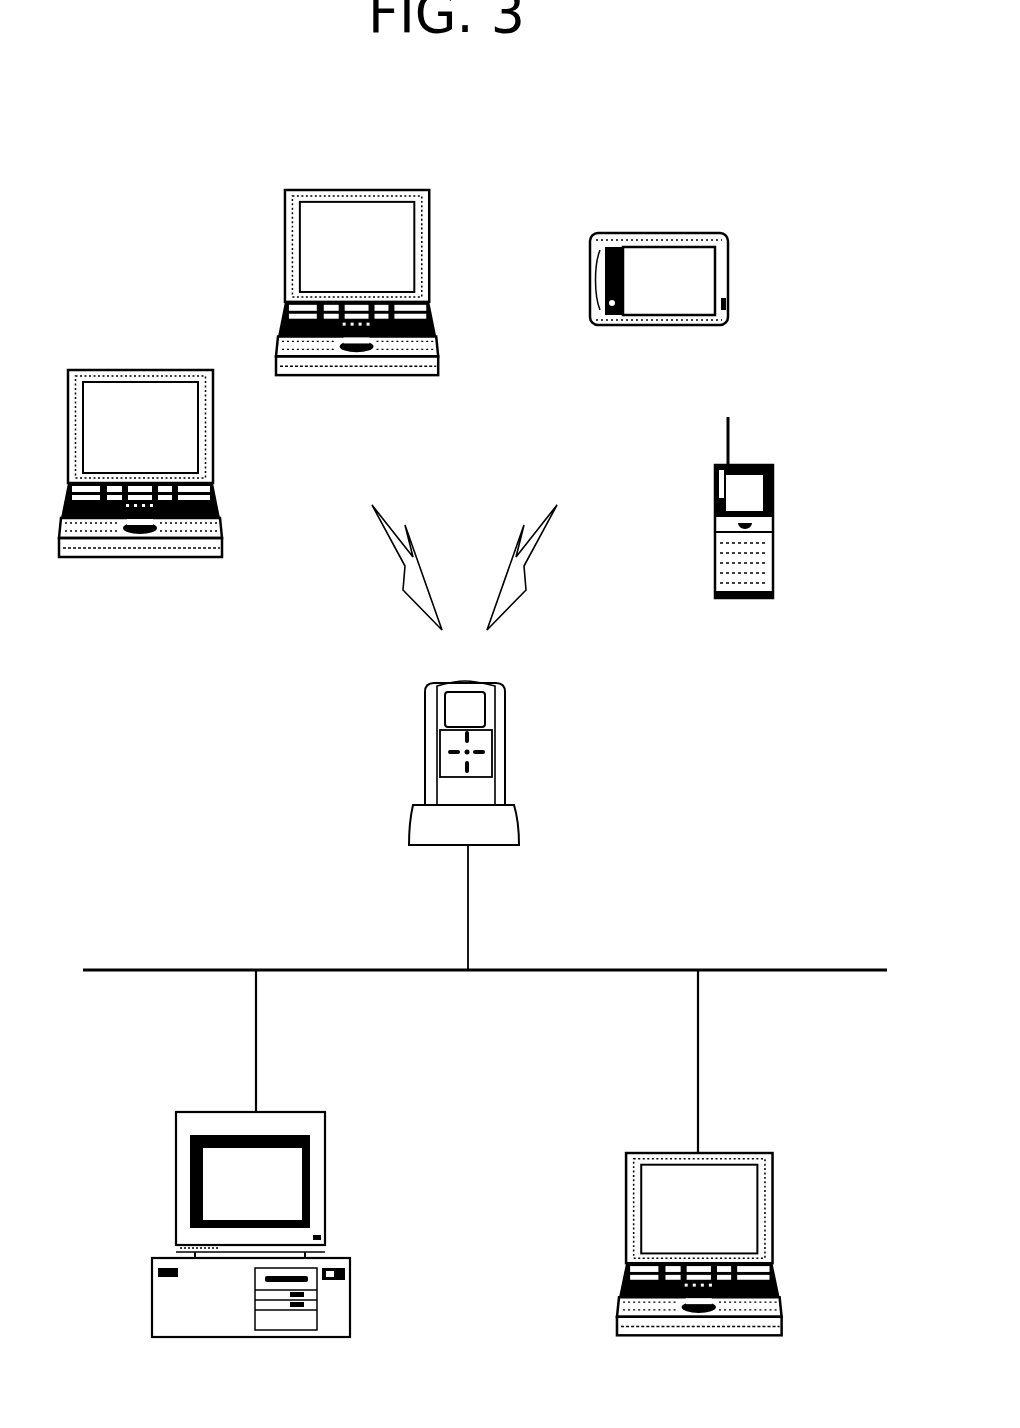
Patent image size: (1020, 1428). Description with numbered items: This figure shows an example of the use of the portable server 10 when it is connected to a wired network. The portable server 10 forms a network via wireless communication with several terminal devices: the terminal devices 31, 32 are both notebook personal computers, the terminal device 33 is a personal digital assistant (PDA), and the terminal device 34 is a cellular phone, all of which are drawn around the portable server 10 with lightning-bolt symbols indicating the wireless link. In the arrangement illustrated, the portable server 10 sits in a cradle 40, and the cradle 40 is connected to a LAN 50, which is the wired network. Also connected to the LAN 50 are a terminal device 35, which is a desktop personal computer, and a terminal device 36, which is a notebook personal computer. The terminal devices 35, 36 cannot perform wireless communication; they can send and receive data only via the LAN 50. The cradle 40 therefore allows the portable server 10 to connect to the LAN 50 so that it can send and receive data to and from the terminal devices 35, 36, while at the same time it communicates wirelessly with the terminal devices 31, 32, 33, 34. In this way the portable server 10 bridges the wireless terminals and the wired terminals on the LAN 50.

The portable server 10 is at (507, 733).
The terminal device 31 is at (136, 370).
The terminal device 32 is at (357, 190).
The terminal device 33 is at (685, 325).
The terminal device 34 is at (737, 600).
The terminal device 35 is at (292, 1112).
The terminal device 36 is at (732, 1152).
The cradle 40 is at (520, 826).
The LAN 50 is at (337, 970).